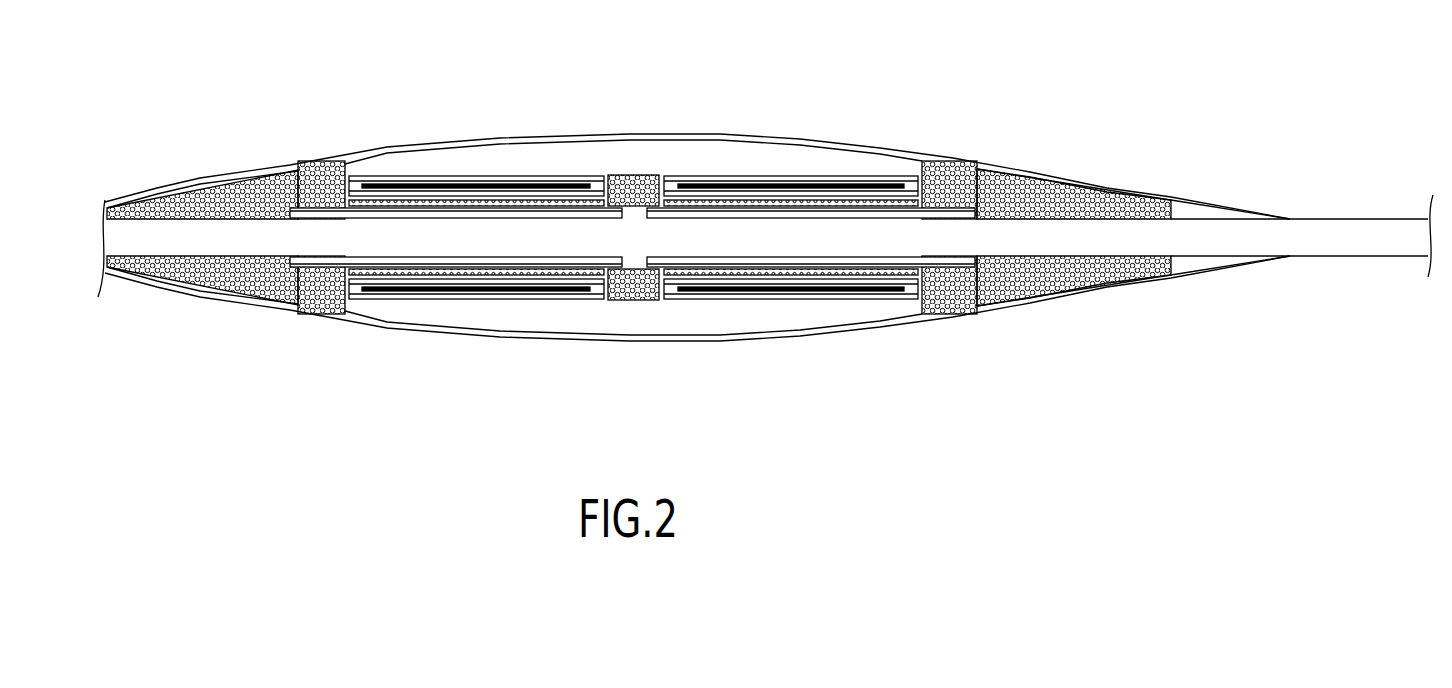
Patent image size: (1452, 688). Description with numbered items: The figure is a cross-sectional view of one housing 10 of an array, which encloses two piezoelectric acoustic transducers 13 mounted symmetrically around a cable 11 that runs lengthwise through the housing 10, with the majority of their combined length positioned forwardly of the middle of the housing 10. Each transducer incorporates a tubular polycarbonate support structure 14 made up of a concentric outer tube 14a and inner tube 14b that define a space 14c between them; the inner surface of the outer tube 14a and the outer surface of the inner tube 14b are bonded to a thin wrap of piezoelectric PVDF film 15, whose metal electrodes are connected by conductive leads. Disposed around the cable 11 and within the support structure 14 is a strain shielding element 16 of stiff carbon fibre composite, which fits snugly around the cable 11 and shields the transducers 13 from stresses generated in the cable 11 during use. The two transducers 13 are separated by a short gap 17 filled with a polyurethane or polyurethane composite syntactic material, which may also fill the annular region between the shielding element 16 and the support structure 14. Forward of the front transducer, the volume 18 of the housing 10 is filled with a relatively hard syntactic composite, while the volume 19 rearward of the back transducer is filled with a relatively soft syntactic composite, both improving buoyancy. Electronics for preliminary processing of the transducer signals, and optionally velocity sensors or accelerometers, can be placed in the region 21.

The housing 10 is at (387, 330).
The cable 11 is at (1343, 258).
The piezoelectric acoustic transducer 13 is at (650, 124).
The tubular polycarbonate support structure 14 is at (587, 180).
The outer tube 14a is at (387, 181).
The inner tube 14b is at (403, 188).
The space 14c is at (527, 188).
The piezoelectric PVDF film 15 is at (493, 297).
The strain shielding element 16 is at (307, 188).
The gap 17 is at (661, 310).
The volume forward of front transducer 18 is at (212, 190).
The volume rearward of back transducer 19 is at (1067, 198).
The electronics region 21 is at (653, 288).